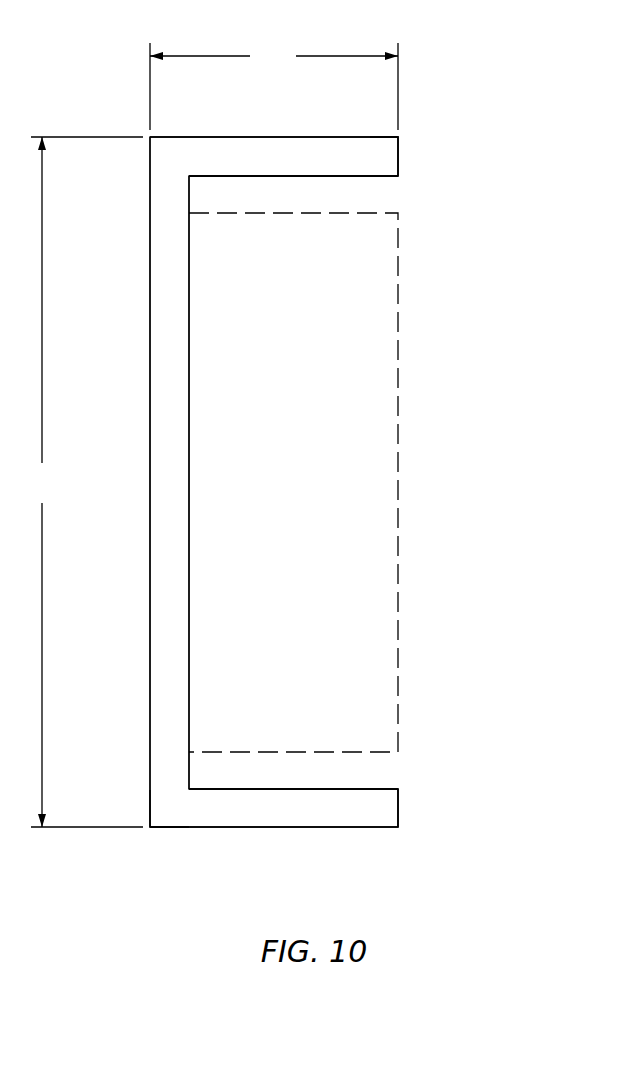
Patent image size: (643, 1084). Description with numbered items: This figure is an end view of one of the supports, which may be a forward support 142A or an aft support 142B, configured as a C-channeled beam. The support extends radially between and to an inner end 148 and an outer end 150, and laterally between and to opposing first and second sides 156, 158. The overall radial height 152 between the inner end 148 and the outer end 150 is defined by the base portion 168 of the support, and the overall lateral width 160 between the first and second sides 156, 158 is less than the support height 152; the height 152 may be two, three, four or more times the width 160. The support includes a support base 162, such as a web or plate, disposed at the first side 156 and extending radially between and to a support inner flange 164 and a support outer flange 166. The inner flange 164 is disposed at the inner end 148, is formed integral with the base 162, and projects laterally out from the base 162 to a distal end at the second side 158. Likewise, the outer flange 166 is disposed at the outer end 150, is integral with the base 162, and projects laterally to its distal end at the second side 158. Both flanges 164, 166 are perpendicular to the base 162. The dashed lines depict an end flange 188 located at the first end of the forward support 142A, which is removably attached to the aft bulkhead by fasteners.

The forward support 142A is at (376, 464).
The aft support 142B is at (490, 169).
The base portion 168 is at (429, 117).
The outer end 150 is at (257, 137).
The support outer flange 166 is at (285, 176).
The support base 162 is at (150, 453).
The end flange 188 is at (398, 460).
The first side 156 is at (150, 806).
The support inner flange 164 is at (285, 789).
The inner end 148 is at (270, 827).
The second side 158 is at (398, 808).
The lateral width 160 is at (274, 86).
The radial height 152 is at (83, 482).